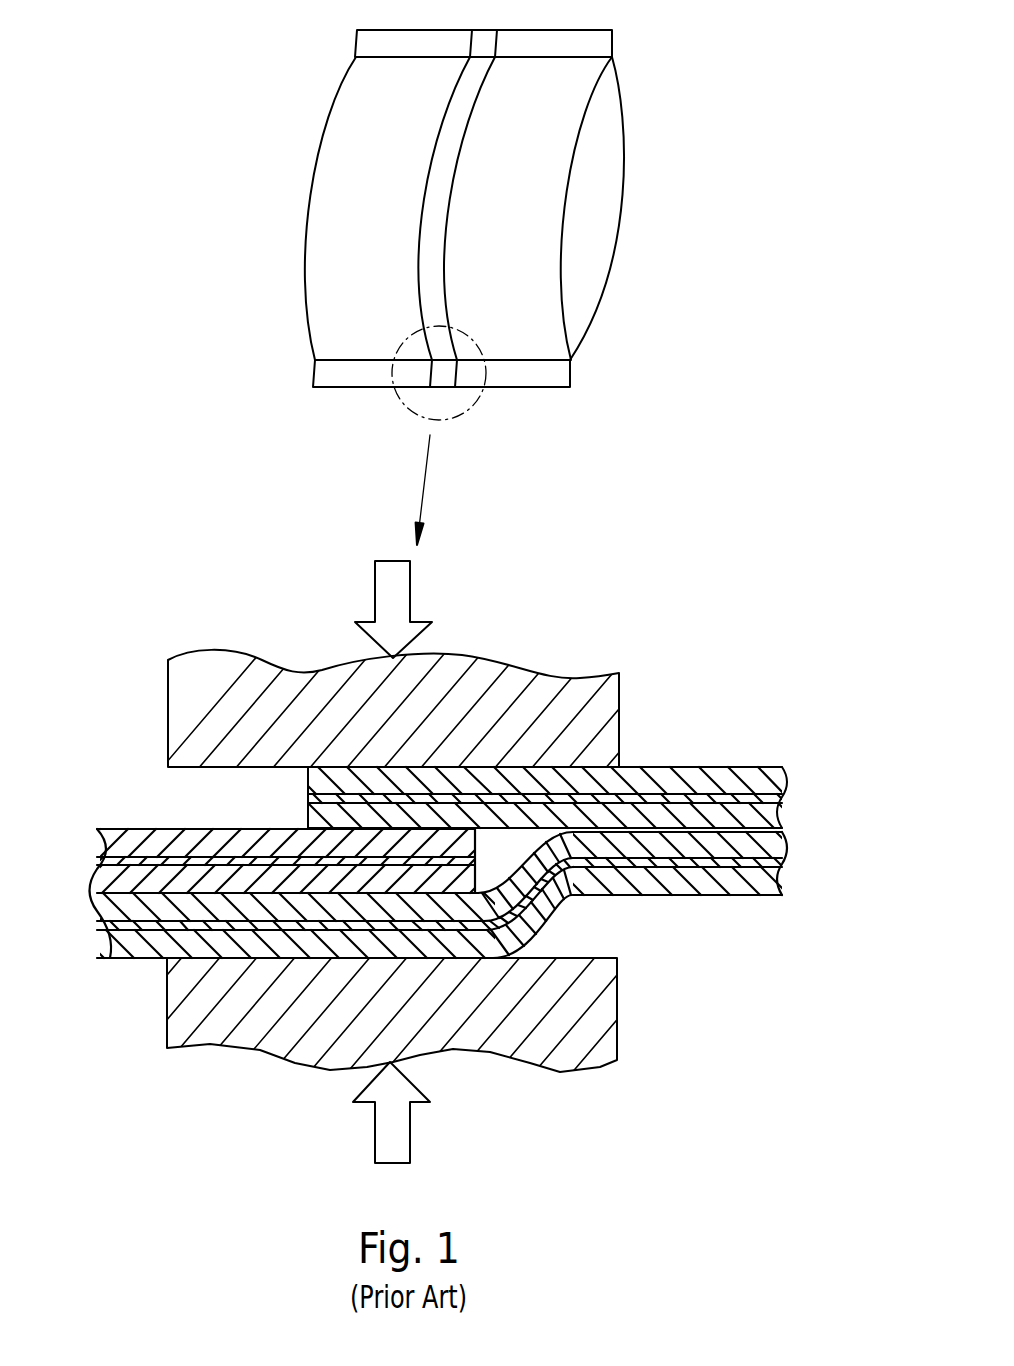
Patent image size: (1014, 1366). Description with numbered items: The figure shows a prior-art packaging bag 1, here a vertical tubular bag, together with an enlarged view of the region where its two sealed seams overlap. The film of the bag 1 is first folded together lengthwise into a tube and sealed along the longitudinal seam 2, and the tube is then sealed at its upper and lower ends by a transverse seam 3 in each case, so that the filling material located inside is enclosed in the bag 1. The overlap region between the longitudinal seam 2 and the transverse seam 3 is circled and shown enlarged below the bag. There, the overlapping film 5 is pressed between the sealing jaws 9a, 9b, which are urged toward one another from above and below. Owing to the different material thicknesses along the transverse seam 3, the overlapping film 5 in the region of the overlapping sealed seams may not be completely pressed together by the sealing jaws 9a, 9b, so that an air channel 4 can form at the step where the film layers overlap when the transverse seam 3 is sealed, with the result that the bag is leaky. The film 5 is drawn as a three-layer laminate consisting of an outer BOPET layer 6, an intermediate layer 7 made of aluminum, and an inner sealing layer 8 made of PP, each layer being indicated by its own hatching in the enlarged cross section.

The bag 1 is at (693, 143).
The longitudinal seam 2 is at (452, 133).
The transverse seam 3 is at (588, 43).
The air channel 4 is at (493, 845).
The film 5 is at (352, 218).
The outer BOPET layer 6 is at (718, 783).
The intermediate layer 7 is at (648, 800).
The inner sealing layer 8 is at (727, 820).
The sealing jaw 9a is at (207, 998).
The sealing jaw 9b is at (218, 732).